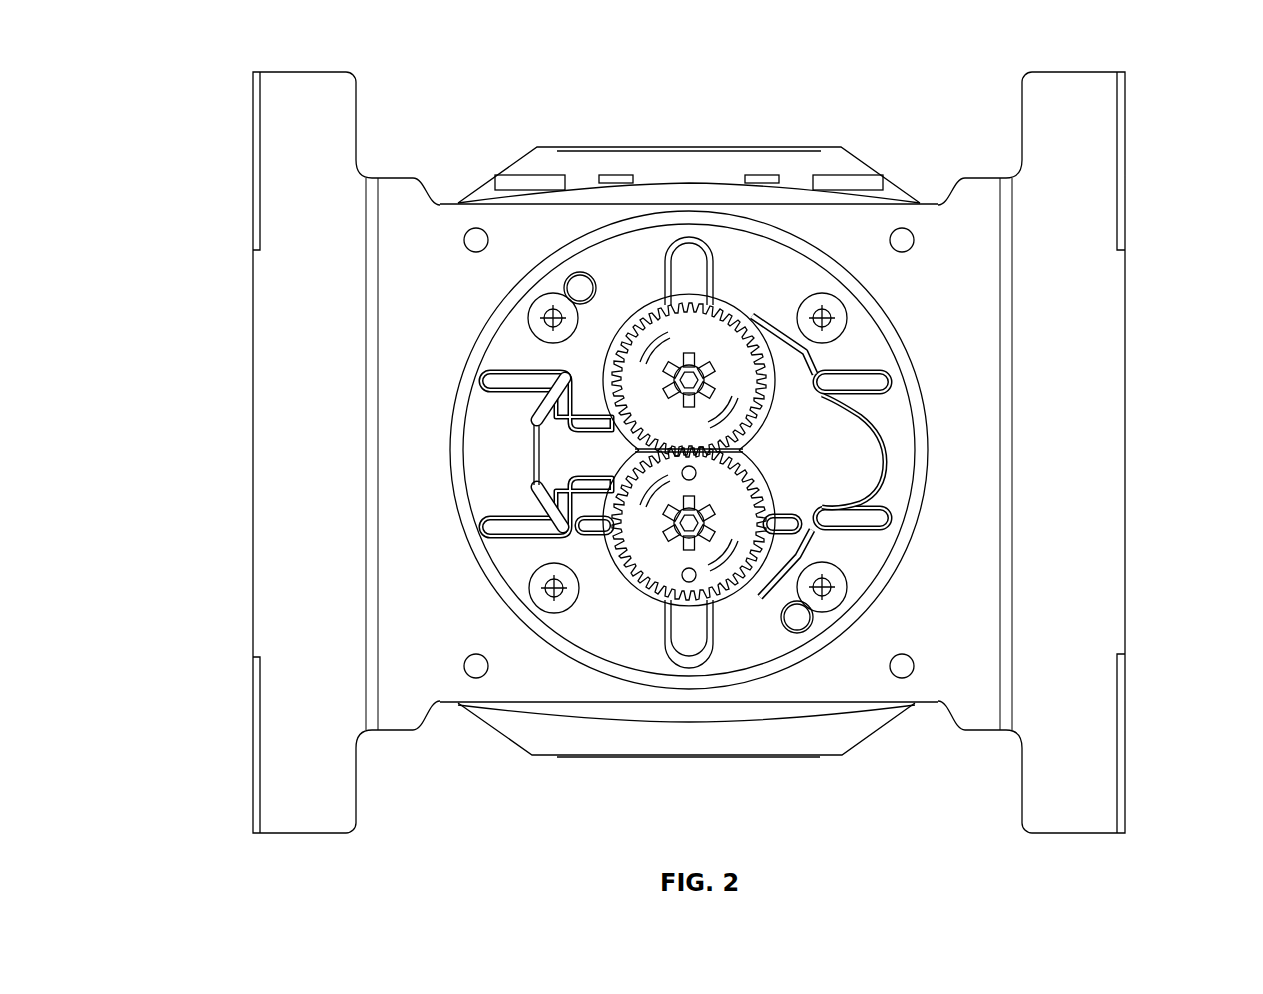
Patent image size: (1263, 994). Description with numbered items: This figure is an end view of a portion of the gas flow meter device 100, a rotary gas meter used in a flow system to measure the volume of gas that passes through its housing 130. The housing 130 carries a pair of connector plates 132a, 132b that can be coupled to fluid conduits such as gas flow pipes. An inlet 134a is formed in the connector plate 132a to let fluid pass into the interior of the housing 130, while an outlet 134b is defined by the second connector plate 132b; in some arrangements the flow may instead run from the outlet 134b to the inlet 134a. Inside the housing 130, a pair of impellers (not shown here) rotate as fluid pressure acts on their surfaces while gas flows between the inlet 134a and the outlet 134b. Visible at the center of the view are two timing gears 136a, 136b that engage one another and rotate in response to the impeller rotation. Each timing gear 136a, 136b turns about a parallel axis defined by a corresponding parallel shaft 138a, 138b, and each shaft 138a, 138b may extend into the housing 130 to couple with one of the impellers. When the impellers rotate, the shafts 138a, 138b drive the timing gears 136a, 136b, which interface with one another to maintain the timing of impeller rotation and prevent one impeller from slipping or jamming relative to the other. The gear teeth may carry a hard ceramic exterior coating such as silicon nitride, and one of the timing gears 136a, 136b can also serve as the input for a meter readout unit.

The gas flow meter device 100 is at (150, 93).
The housing 130 is at (522, 159).
The connector plate 132a is at (253, 650).
The second connector plate 132b is at (1125, 652).
The inlet 134a is at (237, 430).
The outlet 134b is at (1139, 432).
The timing gear 136a is at (716, 316).
The timing gear 136b is at (641, 578).
The shaft 138a is at (688, 372).
The shaft 138b is at (700, 545).